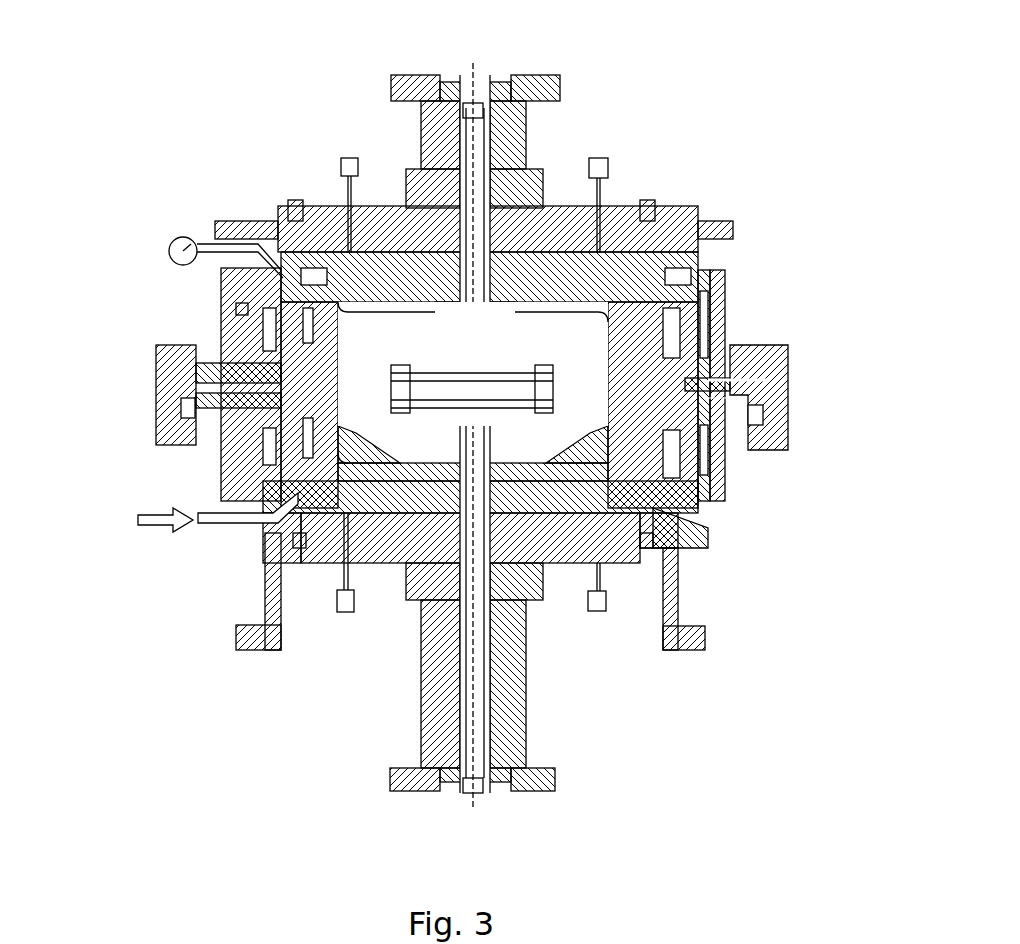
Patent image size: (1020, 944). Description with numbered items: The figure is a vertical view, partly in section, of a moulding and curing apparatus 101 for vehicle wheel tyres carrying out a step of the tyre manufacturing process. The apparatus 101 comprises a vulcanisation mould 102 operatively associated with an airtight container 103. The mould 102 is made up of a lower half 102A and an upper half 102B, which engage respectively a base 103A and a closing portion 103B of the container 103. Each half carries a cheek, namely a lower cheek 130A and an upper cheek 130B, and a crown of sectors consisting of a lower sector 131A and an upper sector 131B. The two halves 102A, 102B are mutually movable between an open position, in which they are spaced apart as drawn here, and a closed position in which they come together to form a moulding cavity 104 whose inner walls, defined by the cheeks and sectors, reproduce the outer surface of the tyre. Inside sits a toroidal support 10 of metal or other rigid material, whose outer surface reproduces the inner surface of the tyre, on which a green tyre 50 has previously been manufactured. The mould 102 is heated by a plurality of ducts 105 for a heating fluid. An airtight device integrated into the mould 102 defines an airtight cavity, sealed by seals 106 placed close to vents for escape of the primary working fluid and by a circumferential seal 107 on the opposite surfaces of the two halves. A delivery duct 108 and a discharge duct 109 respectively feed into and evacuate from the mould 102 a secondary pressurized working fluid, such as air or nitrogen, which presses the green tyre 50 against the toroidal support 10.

The moulding and curing apparatus 101 is at (108, 153).
The toroidal support 10 is at (260, 435).
The green tyre 50 is at (765, 355).
The vulcanisation mould 102 is at (215, 333).
The lower half 102A is at (680, 463).
The upper half 102B is at (690, 312).
The airtight container 103 is at (695, 246).
The base 103A is at (262, 577).
The closing portion 103B is at (258, 210).
The moulding cavity 104 is at (560, 560).
The ducts 105 is at (250, 308).
The seals 106 is at (240, 298).
The circumferential seal 107 is at (165, 393).
The delivery duct 108 is at (255, 522).
The discharge duct 109 is at (190, 228).
The lower cheek 130A is at (378, 563).
The upper cheek 130B is at (382, 195).
The lower sector 131A is at (640, 493).
The upper sector 131B is at (638, 255).